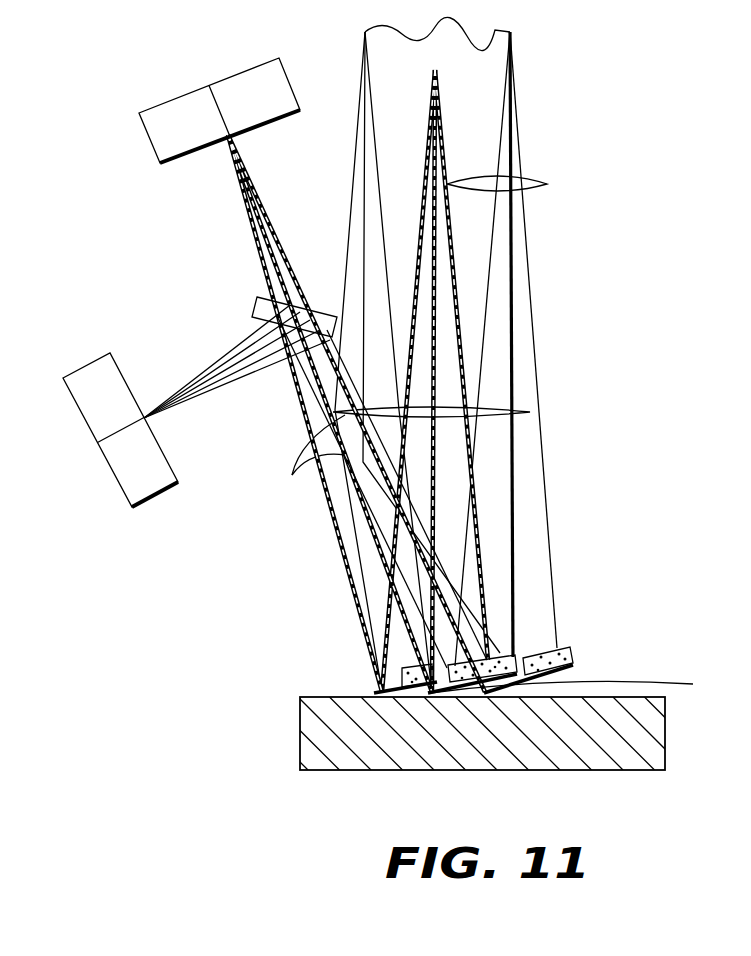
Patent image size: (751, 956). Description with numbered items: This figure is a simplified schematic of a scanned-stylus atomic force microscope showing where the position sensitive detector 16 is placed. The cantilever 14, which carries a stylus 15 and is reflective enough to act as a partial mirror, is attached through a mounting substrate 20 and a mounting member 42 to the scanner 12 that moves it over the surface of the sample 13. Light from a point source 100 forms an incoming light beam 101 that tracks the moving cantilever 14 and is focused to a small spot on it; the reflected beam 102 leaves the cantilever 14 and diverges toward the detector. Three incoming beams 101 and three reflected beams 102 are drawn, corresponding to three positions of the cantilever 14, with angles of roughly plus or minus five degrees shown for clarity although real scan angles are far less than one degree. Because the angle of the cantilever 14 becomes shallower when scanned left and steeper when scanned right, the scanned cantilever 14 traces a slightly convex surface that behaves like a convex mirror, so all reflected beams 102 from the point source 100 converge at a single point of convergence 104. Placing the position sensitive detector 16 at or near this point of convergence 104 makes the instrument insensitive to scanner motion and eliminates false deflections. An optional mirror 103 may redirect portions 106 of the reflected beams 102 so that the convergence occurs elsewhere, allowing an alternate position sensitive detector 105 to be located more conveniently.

The scanner 12 is at (517, 48).
The sample 13 is at (300, 742).
The cantilever 14 is at (580, 688).
The stylus 15 is at (373, 693).
The position sensitive detector 16 is at (207, 85).
The mounting substrate 20 is at (572, 650).
The mounting member 42 is at (513, 467).
The point source 100 is at (440, 70).
The incoming light beam 101 is at (520, 183).
The reflected beam 102 is at (292, 475).
The mirror 103 is at (262, 297).
The point of convergence 104 is at (222, 135).
The position sensitive detector 105 is at (92, 367).
The portions of the reflected laser beams 106 is at (200, 393).